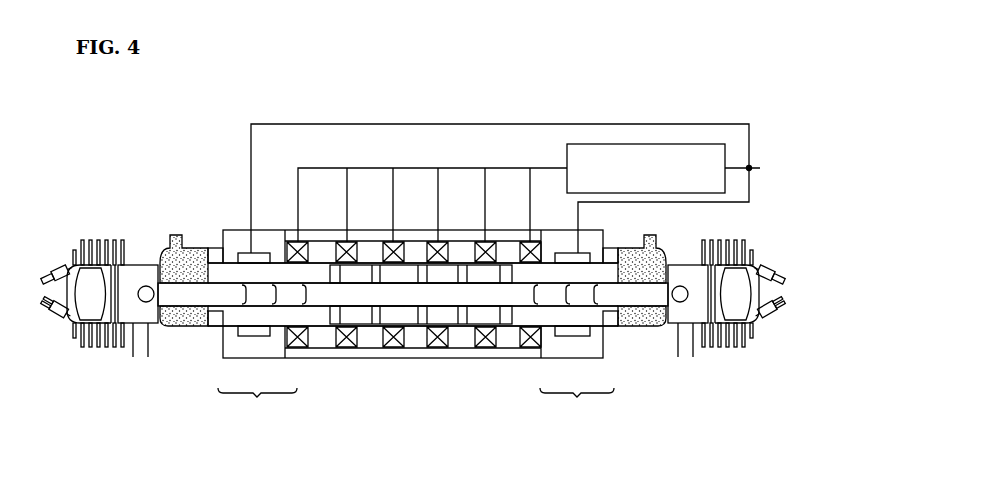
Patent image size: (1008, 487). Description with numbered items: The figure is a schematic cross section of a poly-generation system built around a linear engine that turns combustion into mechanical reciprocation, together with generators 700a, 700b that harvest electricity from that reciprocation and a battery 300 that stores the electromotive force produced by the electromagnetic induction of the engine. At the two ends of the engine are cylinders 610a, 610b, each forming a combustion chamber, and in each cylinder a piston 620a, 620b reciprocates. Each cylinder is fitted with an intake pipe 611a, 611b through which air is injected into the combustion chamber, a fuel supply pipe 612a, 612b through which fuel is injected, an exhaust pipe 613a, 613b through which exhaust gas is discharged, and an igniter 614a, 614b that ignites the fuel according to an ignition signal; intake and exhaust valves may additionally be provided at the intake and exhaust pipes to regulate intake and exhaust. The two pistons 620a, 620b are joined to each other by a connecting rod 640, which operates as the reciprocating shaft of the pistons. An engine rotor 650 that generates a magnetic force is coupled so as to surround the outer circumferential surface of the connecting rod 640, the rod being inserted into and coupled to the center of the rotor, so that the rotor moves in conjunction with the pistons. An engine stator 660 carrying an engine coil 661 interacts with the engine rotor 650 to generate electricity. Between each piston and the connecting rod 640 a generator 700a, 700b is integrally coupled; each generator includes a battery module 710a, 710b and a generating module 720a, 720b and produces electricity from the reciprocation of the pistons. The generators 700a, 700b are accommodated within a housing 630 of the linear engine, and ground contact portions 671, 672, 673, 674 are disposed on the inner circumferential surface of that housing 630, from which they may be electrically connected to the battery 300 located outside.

The battery 300 is at (590, 144).
The cylinder 610a is at (746, 258).
The cylinder 610b is at (80, 258).
The intake pipe 611a is at (653, 240).
The intake pipe 611b is at (173, 246).
The fuel supply pipe 612a is at (762, 319).
The fuel supply pipe 612b is at (68, 320).
The exhaust pipe 613a is at (687, 354).
The exhaust pipe 613b is at (143, 354).
The igniter 614a is at (766, 276).
The igniter 614b is at (58, 276).
The piston 620a is at (698, 272).
The piston 620b is at (131, 270).
The housing 630 is at (596, 250).
The connecting rod 640 is at (368, 298).
The engine rotor 650 is at (470, 319).
The engine stator 660 is at (322, 357).
The engine coil 661 is at (434, 349).
The ground contact portion 671 is at (604, 333).
The ground contact portion 672 is at (564, 253).
The ground contact portion 673 is at (234, 334).
The ground contact portion 674 is at (264, 253).
The generator 700a is at (577, 400).
The generator 700b is at (257, 400).
The battery module 710a is at (550, 298).
The battery module 710b is at (283, 298).
The generating module 720a is at (583, 298).
The generating module 720b is at (250, 298).